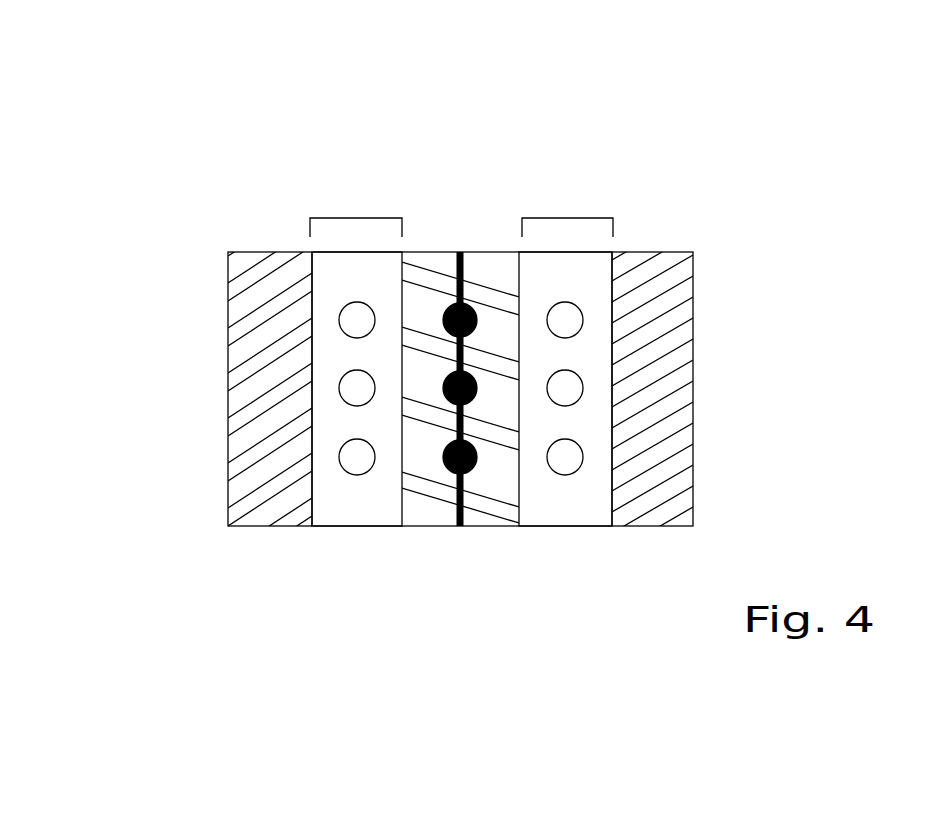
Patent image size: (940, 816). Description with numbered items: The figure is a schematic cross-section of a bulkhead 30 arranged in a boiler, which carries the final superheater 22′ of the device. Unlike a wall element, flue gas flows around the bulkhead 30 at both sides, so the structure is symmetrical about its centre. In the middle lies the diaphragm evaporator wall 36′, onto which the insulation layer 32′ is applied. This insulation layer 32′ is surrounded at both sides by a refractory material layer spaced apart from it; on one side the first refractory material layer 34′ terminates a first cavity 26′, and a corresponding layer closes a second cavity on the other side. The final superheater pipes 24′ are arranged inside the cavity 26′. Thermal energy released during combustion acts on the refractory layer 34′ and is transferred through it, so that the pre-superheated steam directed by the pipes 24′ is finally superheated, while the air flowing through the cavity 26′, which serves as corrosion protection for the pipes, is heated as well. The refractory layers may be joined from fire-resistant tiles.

The final superheater 22′ is at (357, 218).
The bulkhead 30 is at (726, 199).
The final superheater pipes 24′ is at (344, 333).
The first cavity 26′ is at (358, 512).
The insulation layer 32′ is at (497, 510).
The first refractory material layer 34′ is at (240, 289).
The diaphragm evaporator wall 36′ is at (452, 508).